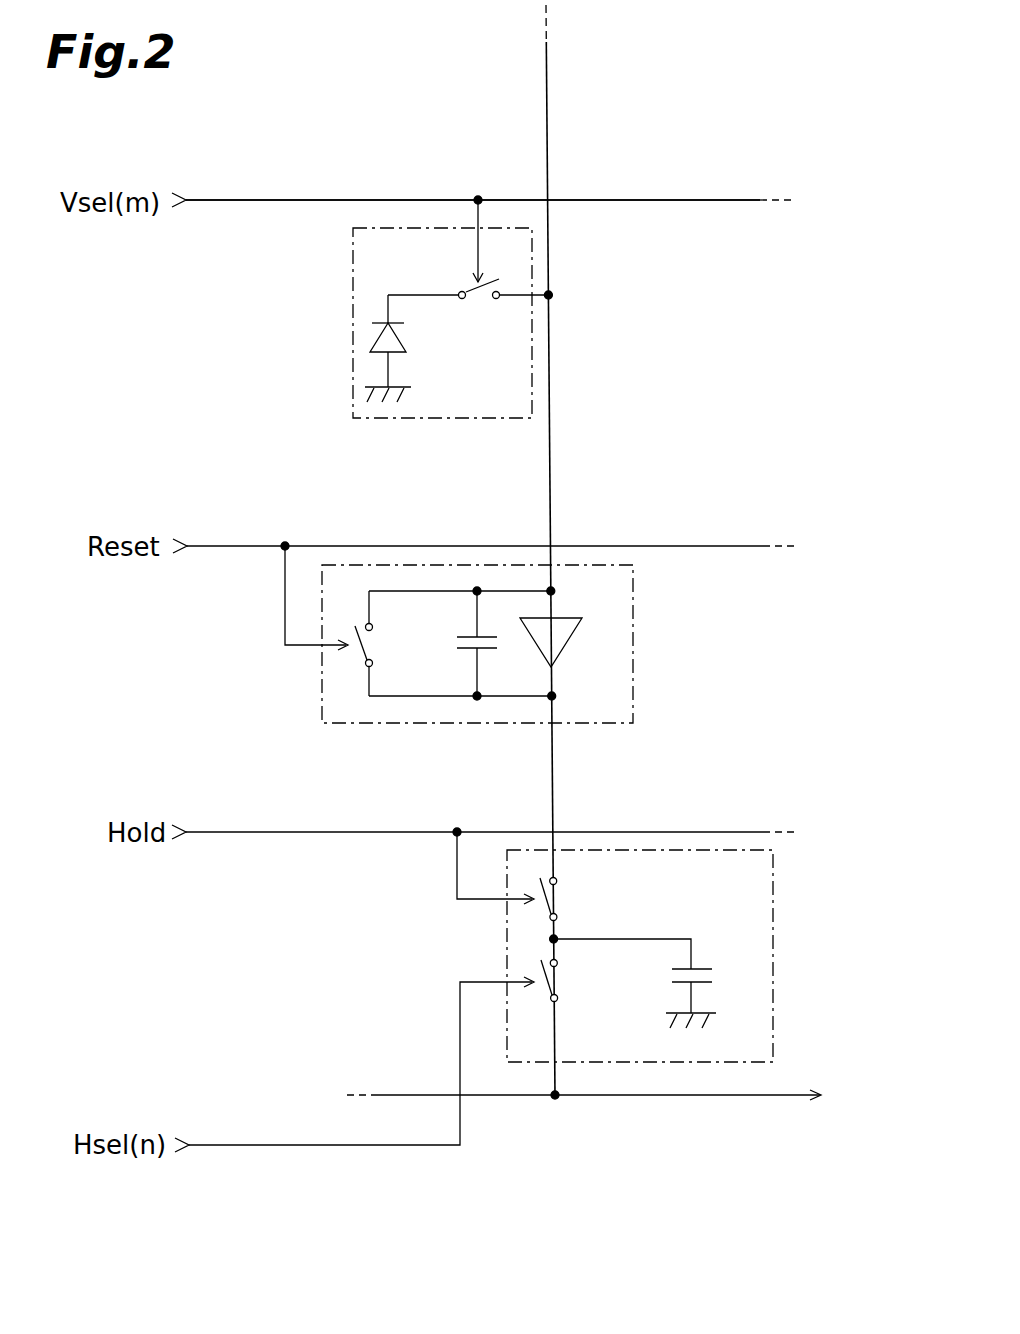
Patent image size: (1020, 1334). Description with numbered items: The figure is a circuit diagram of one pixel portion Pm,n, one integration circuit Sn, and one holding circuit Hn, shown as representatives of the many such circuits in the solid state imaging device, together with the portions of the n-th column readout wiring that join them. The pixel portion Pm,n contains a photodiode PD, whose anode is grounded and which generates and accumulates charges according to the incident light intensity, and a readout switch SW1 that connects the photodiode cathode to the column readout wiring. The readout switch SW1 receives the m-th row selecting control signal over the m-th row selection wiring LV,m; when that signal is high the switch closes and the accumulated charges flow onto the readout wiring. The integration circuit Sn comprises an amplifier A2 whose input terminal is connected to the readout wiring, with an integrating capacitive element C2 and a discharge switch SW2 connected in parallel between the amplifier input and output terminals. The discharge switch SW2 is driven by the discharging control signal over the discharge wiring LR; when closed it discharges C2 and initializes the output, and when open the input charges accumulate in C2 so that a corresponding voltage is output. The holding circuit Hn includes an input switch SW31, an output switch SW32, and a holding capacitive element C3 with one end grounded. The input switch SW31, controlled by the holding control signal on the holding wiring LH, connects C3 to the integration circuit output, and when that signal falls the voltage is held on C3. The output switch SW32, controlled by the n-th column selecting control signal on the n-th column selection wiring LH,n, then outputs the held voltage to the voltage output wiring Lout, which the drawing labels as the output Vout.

The m-th row selection wiring LV,m is at (228, 200).
The pixel portion Pm,n is at (502, 418).
The readout switch SW1 is at (468, 311).
The photodiode PD is at (406, 348).
The discharge wiring LR is at (233, 546).
The integration circuit Sn is at (633, 694).
The discharge switch SW2 is at (394, 643).
The integrating capacitive element C2 is at (486, 643).
The amplifier A2 is at (559, 653).
The holding wiring LH is at (250, 832).
The holding circuit Hn is at (774, 1008).
The input switch SW31 is at (582, 899).
The output switch SW32 is at (583, 983).
The holding capacitive element C3 is at (701, 984).
The n-th column selection wiring LH,n is at (253, 1145).
The voltage output wiring Lout is at (770, 1095).
The output voltage Vout is at (850, 1096).